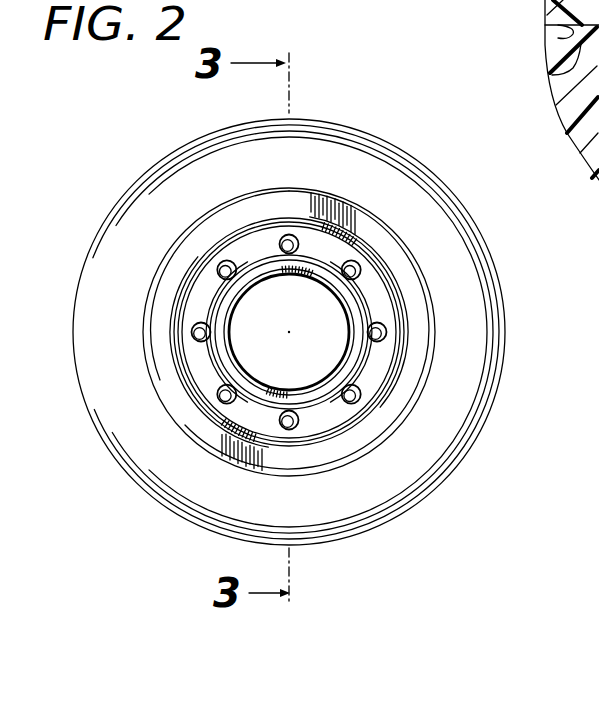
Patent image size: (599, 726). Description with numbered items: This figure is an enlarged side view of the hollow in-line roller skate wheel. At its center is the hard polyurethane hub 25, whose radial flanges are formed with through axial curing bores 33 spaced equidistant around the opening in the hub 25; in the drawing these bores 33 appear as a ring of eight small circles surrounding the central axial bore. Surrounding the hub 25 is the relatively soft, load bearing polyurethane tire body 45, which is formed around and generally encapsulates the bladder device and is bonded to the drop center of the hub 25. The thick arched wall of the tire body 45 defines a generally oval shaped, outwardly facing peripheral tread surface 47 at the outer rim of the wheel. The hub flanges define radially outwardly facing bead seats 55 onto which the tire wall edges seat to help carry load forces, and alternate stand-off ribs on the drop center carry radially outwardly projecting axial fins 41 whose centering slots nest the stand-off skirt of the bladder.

The hub 25 is at (370, 273).
The axial curing bores 33 is at (290, 236).
The tire body 45 is at (470, 422).
The peripheral tread surface 47 is at (515, 343).
The axial fins 41 is at (552, 90).
The bead seats 55 is at (546, 41).